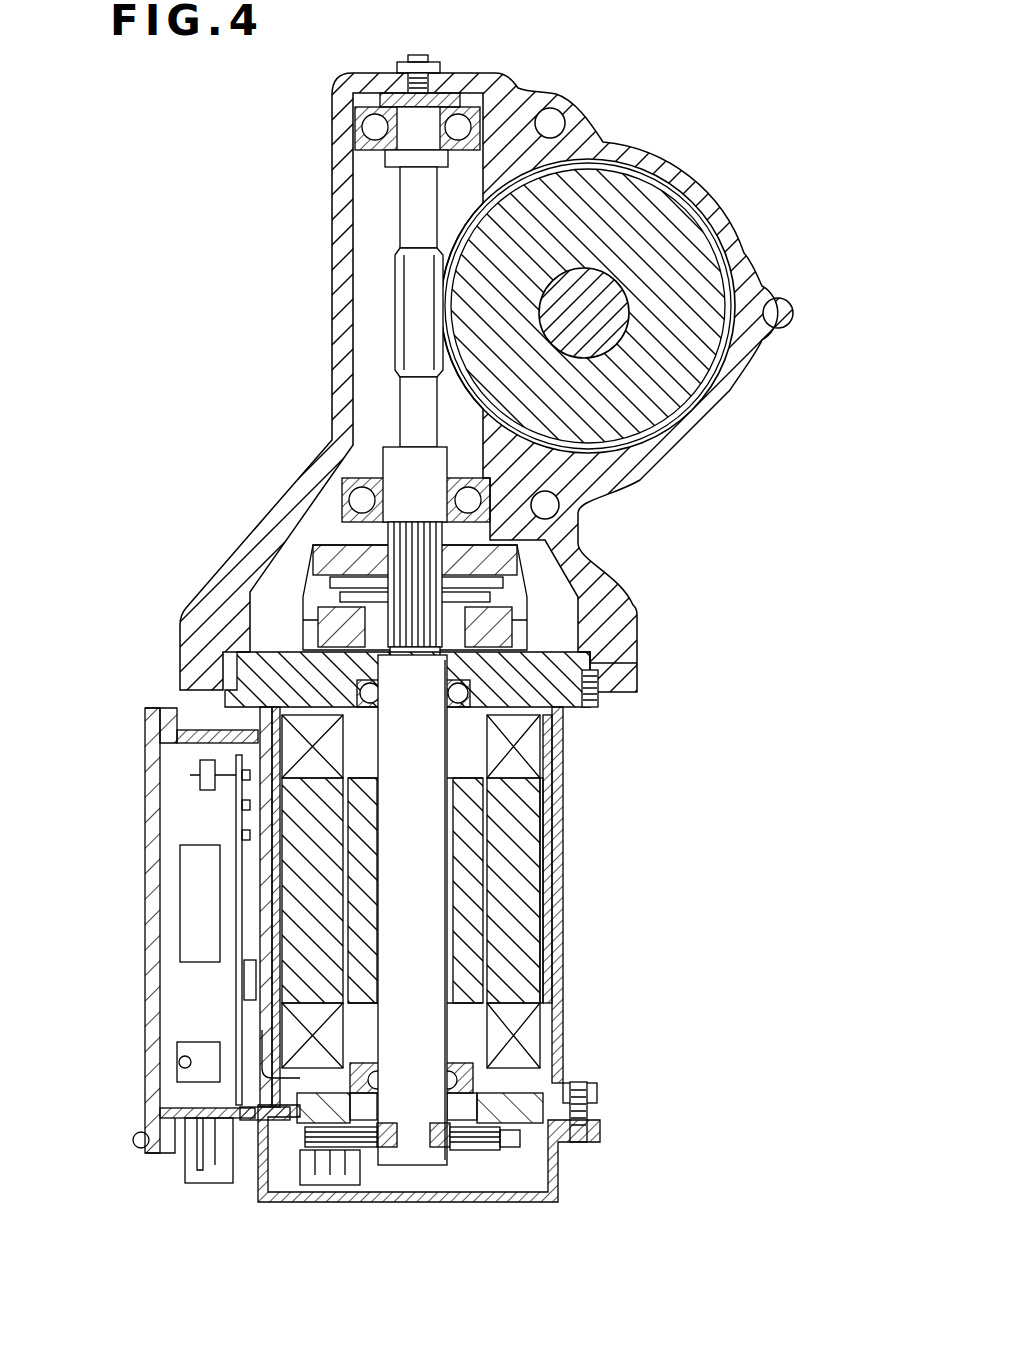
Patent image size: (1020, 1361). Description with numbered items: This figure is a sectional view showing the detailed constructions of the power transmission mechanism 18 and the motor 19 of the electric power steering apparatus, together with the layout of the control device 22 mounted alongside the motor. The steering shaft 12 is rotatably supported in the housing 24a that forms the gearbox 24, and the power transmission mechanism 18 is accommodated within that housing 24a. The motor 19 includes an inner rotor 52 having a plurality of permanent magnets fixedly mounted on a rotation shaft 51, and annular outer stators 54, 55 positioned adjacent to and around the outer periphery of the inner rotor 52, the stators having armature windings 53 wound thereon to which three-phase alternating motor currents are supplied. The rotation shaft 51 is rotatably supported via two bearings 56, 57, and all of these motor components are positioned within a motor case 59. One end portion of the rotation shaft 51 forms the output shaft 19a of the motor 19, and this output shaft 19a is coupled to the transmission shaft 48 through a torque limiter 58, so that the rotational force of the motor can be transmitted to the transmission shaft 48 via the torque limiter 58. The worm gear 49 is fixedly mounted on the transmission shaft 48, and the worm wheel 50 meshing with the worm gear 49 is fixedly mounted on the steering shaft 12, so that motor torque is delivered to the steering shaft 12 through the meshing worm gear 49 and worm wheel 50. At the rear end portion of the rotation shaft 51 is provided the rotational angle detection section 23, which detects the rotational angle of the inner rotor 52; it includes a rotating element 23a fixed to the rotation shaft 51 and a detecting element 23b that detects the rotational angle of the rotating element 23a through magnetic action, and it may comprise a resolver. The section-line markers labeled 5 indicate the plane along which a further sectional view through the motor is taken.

The steering shaft 12 is at (650, 385).
The power transmission mechanism 18 is at (319, 357).
The motor 19 is at (502, 928).
The output shaft 19a is at (525, 748).
The control device 22 is at (200, 835).
The rotational angle detection section 23 is at (423, 1178).
The rotating element 23a is at (433, 1150).
The detecting element 23b is at (463, 1157).
The gearbox 24 is at (744, 218).
The housing 24a is at (655, 172).
The transmission shaft 48 is at (324, 447).
The worm gear 49 is at (418, 257).
The worm wheel 50 is at (596, 330).
The rotation shaft 51 is at (425, 905).
The inner rotor 52 is at (465, 868).
The armature windings 53 is at (560, 755).
The outer stator 54 is at (542, 947).
The outer stator 55 is at (550, 977).
The bearing 56 is at (183, 680).
The bearing 57 is at (490, 1080).
The torque limiter 58 is at (297, 617).
The motor case 59 is at (548, 1020).
The section line V-V 5 is at (38, 862).